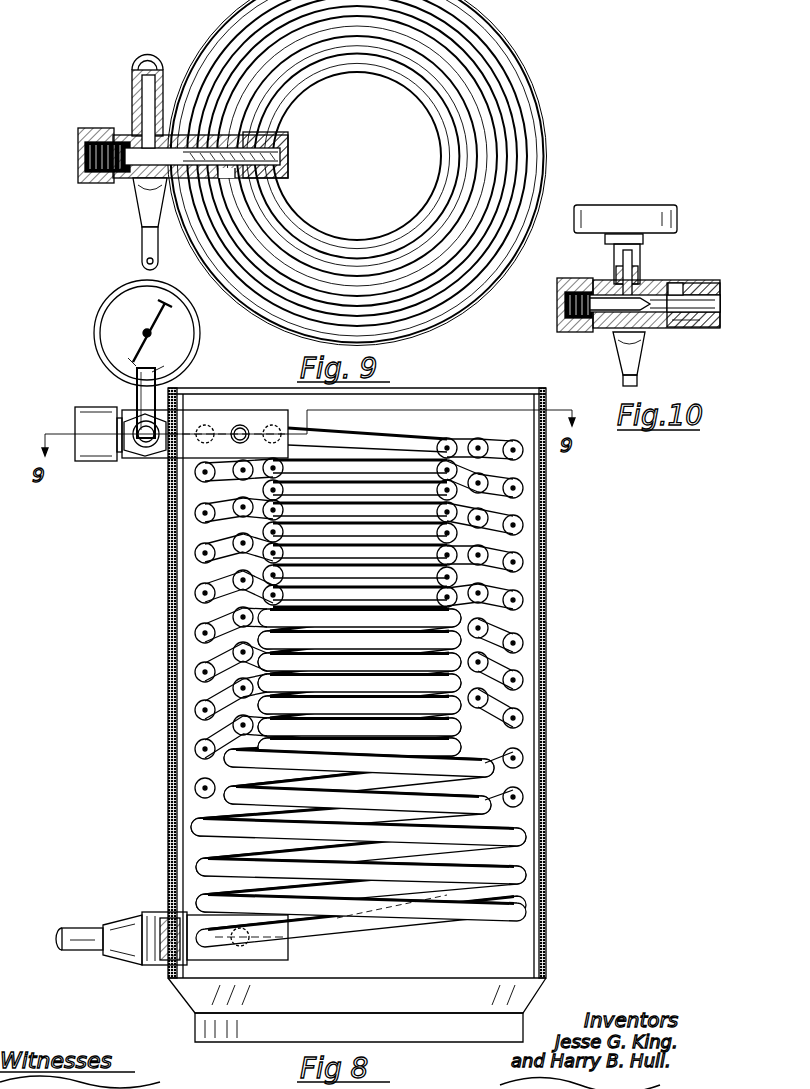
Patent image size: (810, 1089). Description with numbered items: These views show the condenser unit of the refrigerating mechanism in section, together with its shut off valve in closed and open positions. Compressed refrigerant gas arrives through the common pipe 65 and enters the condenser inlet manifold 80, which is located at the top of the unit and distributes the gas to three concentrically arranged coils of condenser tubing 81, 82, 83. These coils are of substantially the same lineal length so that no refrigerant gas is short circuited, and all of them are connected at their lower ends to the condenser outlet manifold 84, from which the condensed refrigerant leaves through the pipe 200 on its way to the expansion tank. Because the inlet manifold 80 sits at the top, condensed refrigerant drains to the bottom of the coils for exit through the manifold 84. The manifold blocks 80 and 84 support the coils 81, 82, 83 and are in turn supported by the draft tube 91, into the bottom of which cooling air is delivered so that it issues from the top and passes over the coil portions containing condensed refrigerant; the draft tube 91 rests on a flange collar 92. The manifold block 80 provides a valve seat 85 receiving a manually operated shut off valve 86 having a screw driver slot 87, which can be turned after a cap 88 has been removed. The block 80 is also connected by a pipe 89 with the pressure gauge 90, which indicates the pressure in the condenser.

In FIG. 9, the common pipe 65 is at (140, 245).
In FIG. 10, the common pipe 65 is at (637, 378).
In FIG. 8, the common pipe 65 is at (137, 392).
In FIG. 9, the condenser inlet manifold 80 is at (127, 135).
In FIG. 10, the condenser inlet manifold 80 is at (700, 282).
In FIG. 8, the condenser inlet manifold 80 is at (193, 418).
In FIG. 9, the coil of condenser tubing 81 is at (410, 2).
In FIG. 8, the coil of condenser tubing 81 is at (195, 513).
In FIG. 9, the coil of condenser tubing 82 is at (342, 28).
In FIG. 8, the coil of condenser tubing 82 is at (233, 535).
In FIG. 9, the coil of condenser tubing 83 is at (305, 75).
In FIG. 8, the coil of condenser tubing 83 is at (225, 575).
In FIG. 8, the condenser outlet manifold 84 is at (200, 955).
In FIG. 9, the valve seat 85 is at (187, 133).
In FIG. 10, the valve seat 85 is at (653, 295).
In FIG. 9, the shut off valve 86 is at (133, 183).
In FIG. 10, the shut off valve 86 is at (617, 322).
In FIG. 9, the screw driver slot 87 is at (78, 167).
In FIG. 10, the screw driver slot 87 is at (557, 310).
In FIG. 9, the cap 88 is at (78, 147).
In FIG. 10, the cap 88 is at (557, 295).
In FIG. 9, the pipe 89 is at (135, 100).
In FIG. 10, the pipe 89 is at (636, 262).
In FIG. 8, the pipe 89 is at (137, 405).
In FIG. 10, the pressure gauge 90 is at (677, 220).
In FIG. 8, the pressure gauge 90 is at (98, 310).
In FIG. 8, the draft tube 91 is at (545, 697).
In FIG. 8, the flange collar 92 is at (540, 995).
In FIG. 8, the pipe 200 is at (80, 925).